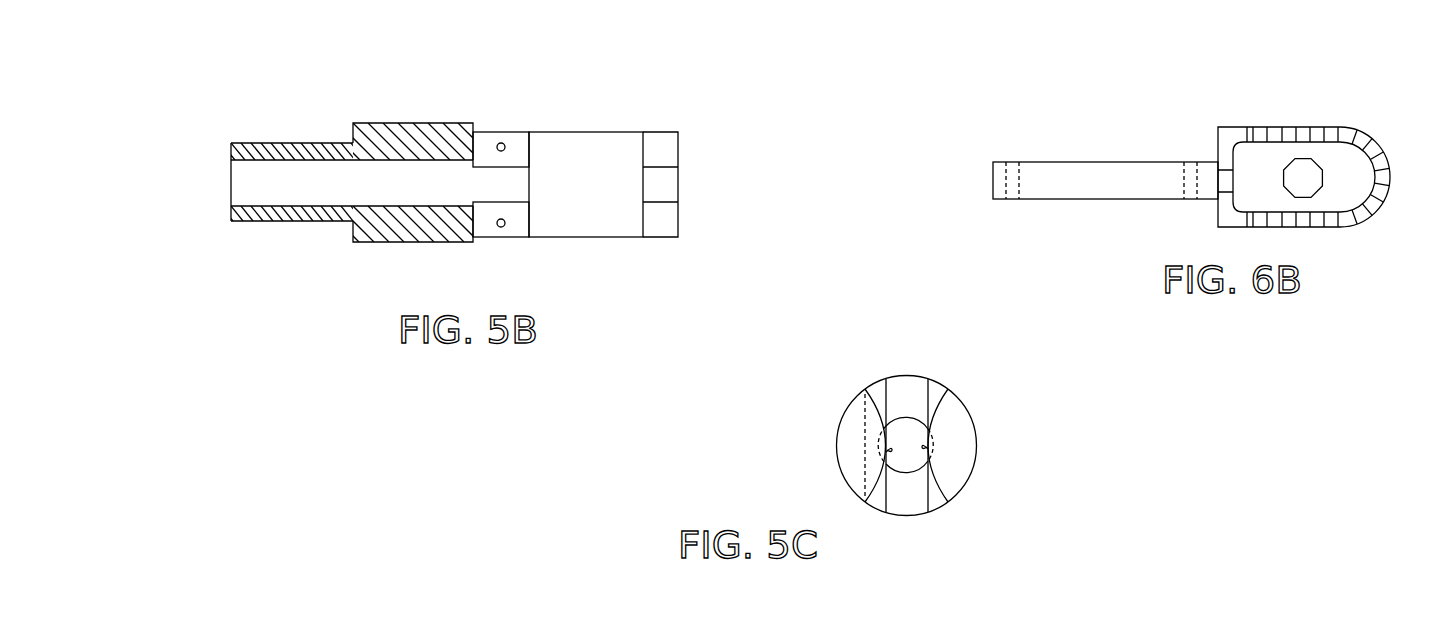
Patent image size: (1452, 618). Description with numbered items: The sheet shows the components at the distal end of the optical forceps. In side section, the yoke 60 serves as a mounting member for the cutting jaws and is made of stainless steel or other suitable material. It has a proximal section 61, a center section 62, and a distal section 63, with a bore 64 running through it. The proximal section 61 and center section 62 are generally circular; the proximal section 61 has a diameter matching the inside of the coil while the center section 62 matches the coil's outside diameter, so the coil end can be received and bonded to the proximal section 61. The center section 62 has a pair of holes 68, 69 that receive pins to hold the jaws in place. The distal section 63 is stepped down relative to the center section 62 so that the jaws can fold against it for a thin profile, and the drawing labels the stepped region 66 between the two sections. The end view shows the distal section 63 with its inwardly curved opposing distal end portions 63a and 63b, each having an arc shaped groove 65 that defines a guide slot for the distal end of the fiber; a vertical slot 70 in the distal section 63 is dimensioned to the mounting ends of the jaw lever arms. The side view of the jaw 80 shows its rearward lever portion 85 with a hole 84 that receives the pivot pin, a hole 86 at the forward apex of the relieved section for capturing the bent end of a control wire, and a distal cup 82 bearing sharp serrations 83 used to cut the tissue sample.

In FIG. 5B, the yoke 60 is at (475, 163).
In FIG. 5C, the yoke 60 is at (903, 444).
In FIG. 5B, the proximal section 61 is at (280, 145).
In FIG. 5B, the center section 62 is at (370, 129).
In FIG. 5B, the distal section 63 is at (595, 127).
In FIG. 5B, the distal end portion 63a is at (660, 138).
In FIG. 5C, the distal end portion 63a is at (937, 382).
In FIG. 5C, the distal end portion 63b is at (878, 390).
In FIG. 5B, the bore 64 is at (248, 165).
In FIG. 5C, the bore 64 is at (907, 465).
In FIG. 5B, the arc shaped groove 65 is at (662, 181).
In FIG. 5C, the arc shaped groove 65 is at (890, 452).
In FIG. 5B, the recess 66 is at (518, 187).
In FIG. 5B, the hole 68 is at (502, 141).
In FIG. 5B, the hole 69 is at (502, 226).
In FIG. 5C, the vertical slot 70 is at (907, 382).
In FIG. 6B, the jaw 80 is at (1219, 128).
In FIG. 6B, the distal cup 82 is at (1332, 157).
In FIG. 6B, the serrations 83 is at (1302, 135).
In FIG. 6B, the hole 84 is at (1013, 166).
In FIG. 6B, the lever portion 85 is at (1096, 163).
In FIG. 6B, the hole 86 is at (1188, 166).